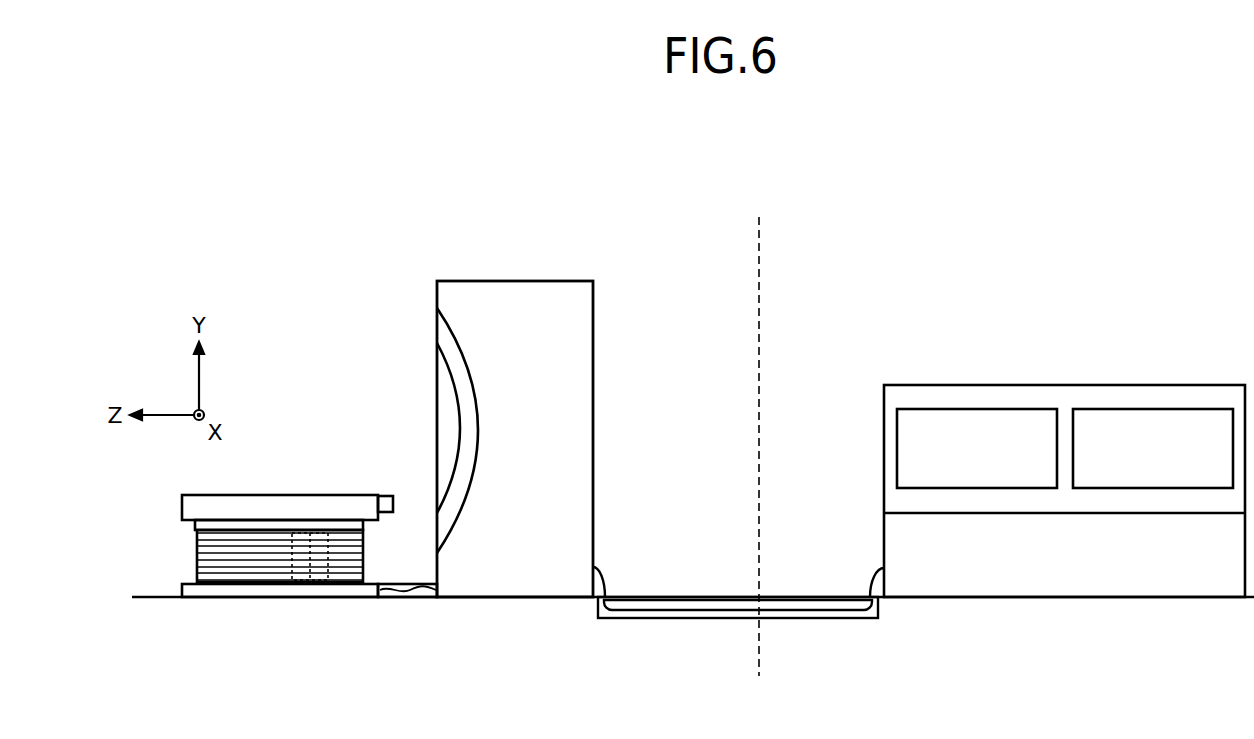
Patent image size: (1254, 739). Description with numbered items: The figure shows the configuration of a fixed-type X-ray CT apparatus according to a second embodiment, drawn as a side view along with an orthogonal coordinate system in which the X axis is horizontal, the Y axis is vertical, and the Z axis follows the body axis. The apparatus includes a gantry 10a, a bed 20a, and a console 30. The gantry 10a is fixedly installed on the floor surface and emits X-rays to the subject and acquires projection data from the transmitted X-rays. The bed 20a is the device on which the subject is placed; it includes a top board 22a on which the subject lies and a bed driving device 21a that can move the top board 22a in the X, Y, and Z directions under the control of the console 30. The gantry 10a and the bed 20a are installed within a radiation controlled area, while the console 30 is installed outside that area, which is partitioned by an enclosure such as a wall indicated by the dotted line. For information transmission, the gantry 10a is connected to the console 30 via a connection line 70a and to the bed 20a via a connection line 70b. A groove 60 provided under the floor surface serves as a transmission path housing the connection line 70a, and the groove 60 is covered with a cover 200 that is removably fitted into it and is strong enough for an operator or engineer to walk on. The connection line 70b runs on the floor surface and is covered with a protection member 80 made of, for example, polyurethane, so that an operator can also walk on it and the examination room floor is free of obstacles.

The gantry 10a is at (532, 305).
The bed 20a is at (176, 557).
The bed driving device 21a is at (310, 583).
The top board 22a is at (386, 500).
The console 30 is at (1228, 398).
The groove 60 is at (610, 620).
The connection line 70a is at (605, 598).
The connection line 70b is at (398, 600).
The protection member 80 is at (415, 582).
The cover 200 is at (713, 597).